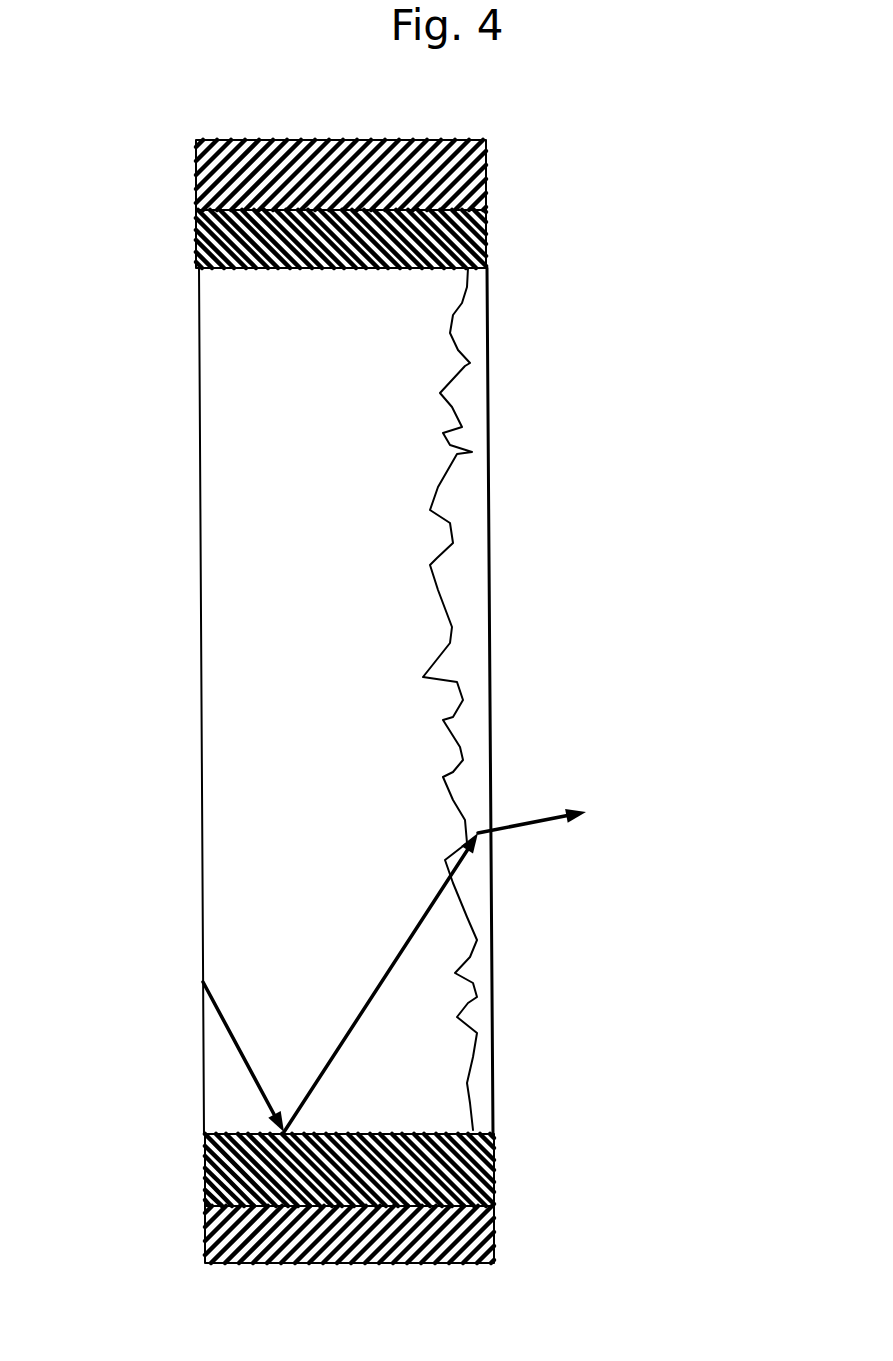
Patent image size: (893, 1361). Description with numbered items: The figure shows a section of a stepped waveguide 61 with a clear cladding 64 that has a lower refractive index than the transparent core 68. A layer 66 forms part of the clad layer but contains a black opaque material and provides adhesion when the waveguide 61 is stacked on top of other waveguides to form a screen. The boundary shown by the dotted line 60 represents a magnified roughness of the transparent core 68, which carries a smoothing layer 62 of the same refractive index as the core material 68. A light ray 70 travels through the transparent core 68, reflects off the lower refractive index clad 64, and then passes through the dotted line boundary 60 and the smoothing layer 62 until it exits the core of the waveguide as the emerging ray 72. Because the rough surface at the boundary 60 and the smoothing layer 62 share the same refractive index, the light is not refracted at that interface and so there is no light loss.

The dotted line boundary 60 is at (487, 322).
The stepped waveguide 61 is at (151, 628).
The smoothing layer 62 is at (468, 580).
The clear cladding 64 is at (496, 1150).
The black opaque clad layer 66 is at (495, 1238).
The transparent core 68 is at (208, 467).
The light ray 70 is at (220, 1018).
The emitted light ray 72 is at (600, 812).